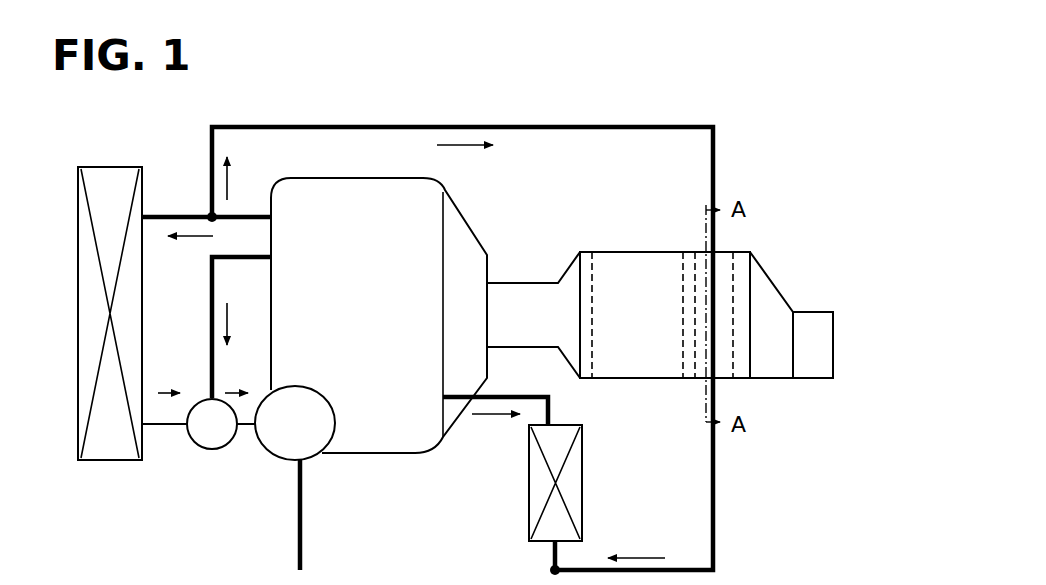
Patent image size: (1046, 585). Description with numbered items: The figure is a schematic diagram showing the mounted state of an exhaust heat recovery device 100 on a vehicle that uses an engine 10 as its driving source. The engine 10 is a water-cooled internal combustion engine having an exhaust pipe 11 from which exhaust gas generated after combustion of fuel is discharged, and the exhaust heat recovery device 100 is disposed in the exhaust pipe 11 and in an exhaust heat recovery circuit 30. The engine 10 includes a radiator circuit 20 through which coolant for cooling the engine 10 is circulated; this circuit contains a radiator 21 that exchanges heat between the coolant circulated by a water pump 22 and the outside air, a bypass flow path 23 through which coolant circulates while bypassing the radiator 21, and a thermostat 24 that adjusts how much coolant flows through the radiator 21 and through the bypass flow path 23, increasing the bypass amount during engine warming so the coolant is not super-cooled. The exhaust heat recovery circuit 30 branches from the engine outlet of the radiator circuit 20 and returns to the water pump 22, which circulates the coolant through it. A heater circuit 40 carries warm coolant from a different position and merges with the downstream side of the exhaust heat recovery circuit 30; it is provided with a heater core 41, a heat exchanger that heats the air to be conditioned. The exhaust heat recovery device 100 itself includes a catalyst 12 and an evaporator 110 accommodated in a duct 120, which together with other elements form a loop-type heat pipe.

The engine 10 is at (315, 178).
The exhaust pipe 11 is at (517, 283).
The catalyst 12 is at (628, 268).
The radiator circuit 20 is at (172, 215).
The radiator 21 is at (112, 167).
The water pump 22 is at (290, 459).
The bypass flow path 23 is at (212, 323).
The thermostat 24 is at (212, 449).
The exhaust heat recovery circuit 30 is at (365, 127).
The heater circuit 40 is at (550, 410).
The heater core 41 is at (582, 478).
The exhaust heat recovery device 100 is at (597, 244).
The evaporator 110 is at (720, 265).
The duct 120 is at (657, 252).